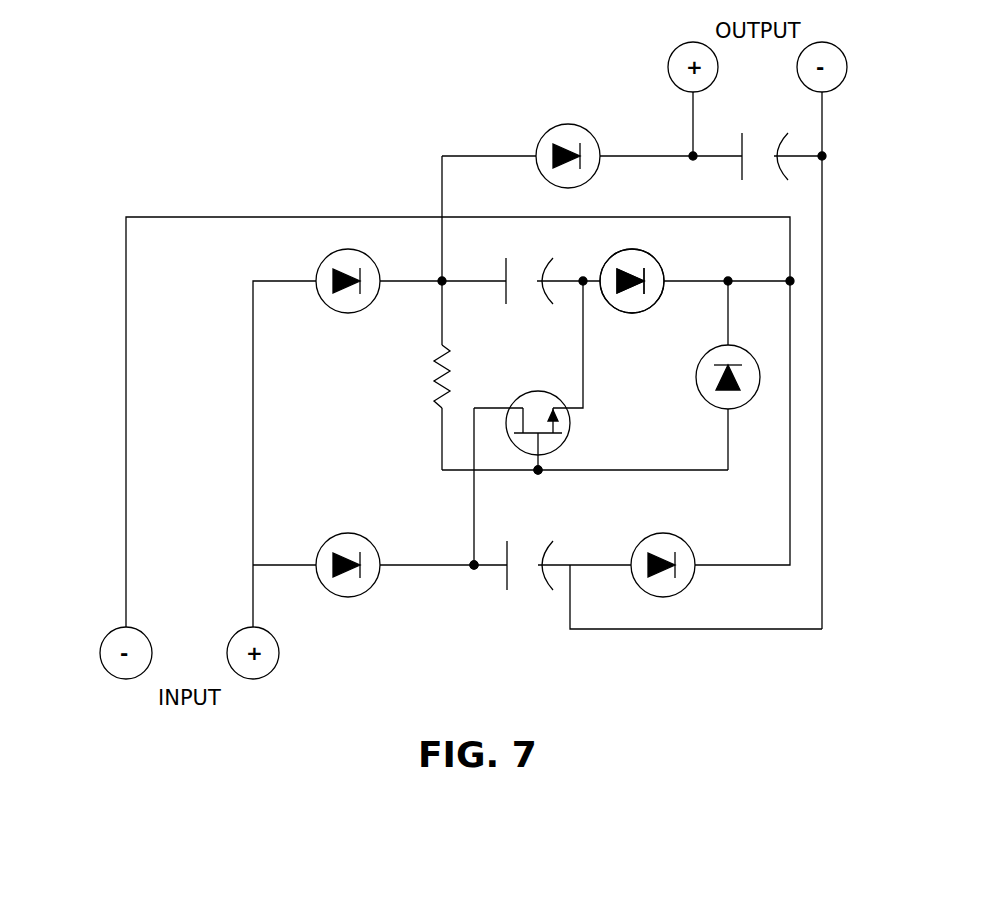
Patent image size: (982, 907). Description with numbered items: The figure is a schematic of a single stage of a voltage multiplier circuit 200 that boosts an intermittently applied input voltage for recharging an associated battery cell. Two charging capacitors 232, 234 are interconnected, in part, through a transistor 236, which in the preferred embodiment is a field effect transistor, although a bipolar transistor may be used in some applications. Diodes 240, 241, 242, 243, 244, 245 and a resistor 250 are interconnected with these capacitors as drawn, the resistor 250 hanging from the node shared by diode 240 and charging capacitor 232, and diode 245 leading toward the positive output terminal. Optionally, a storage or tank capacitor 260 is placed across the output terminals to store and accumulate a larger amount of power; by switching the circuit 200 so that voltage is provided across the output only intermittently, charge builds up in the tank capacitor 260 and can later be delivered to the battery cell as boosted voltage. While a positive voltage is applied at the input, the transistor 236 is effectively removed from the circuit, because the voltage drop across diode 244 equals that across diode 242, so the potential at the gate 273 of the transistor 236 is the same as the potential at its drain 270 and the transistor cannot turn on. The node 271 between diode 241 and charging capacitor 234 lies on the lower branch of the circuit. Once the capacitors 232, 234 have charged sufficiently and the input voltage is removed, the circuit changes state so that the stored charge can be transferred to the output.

The voltage multiplier circuit 200 is at (136, 140).
The charging capacitor 232 is at (520, 263).
The charging capacitor 234 is at (524, 550).
The transistor 236 is at (540, 392).
The diode 240 is at (348, 313).
The diode 241 is at (350, 533).
The diode 242 is at (630, 314).
The diode 243 is at (663, 533).
The diode 244 is at (690, 378).
The diode 245 is at (567, 124).
The resistor 250 is at (435, 373).
The tank capacitor 260 is at (757, 174).
The drain 270 is at (585, 278).
The node 271 is at (473, 571).
The gate 273 is at (540, 474).